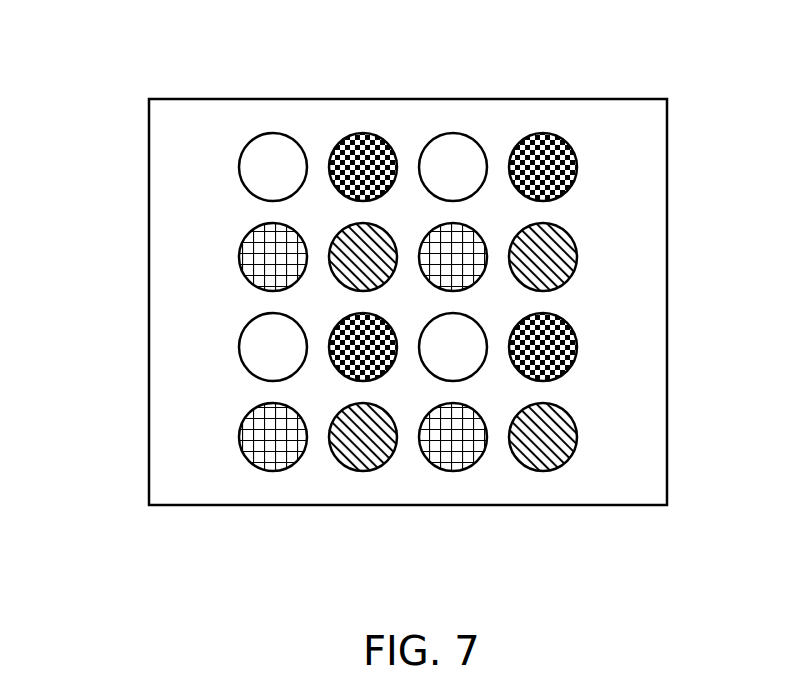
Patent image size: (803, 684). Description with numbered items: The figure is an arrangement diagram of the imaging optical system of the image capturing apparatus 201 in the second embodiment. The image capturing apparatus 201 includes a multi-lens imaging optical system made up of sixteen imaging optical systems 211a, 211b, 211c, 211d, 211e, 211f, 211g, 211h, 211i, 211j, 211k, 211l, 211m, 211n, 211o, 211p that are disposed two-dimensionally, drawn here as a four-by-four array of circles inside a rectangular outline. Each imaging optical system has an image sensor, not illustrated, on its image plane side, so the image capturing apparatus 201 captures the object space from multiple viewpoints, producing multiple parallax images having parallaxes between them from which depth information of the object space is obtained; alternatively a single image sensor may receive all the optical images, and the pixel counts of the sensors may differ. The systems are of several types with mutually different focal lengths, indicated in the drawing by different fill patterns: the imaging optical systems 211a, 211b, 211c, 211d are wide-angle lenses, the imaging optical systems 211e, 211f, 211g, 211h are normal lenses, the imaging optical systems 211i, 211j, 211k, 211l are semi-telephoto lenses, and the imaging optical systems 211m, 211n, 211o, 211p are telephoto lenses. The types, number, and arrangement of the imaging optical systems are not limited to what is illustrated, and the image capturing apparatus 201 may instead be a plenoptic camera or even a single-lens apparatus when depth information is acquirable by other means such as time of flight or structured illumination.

The image capturing apparatus 201 is at (430, 98).
The imaging optical system 211a is at (273, 133).
The imaging optical system 211b is at (453, 133).
The imaging optical system 211c is at (238, 352).
The imaging optical system 211d is at (478, 372).
The imaging optical system 211e is at (363, 133).
The imaging optical system 211f is at (543, 133).
The imaging optical system 211g is at (338, 371).
The imaging optical system 211h is at (578, 352).
The imaging optical system 211i is at (238, 254).
The imaging optical system 211j is at (470, 232).
The imaging optical system 211k is at (273, 471).
The imaging optical system 211l is at (453, 471).
The imaging optical system 211m is at (338, 233).
The imaging optical system 211n is at (578, 255).
The imaging optical system 211o is at (363, 471).
The imaging optical system 211p is at (543, 471).